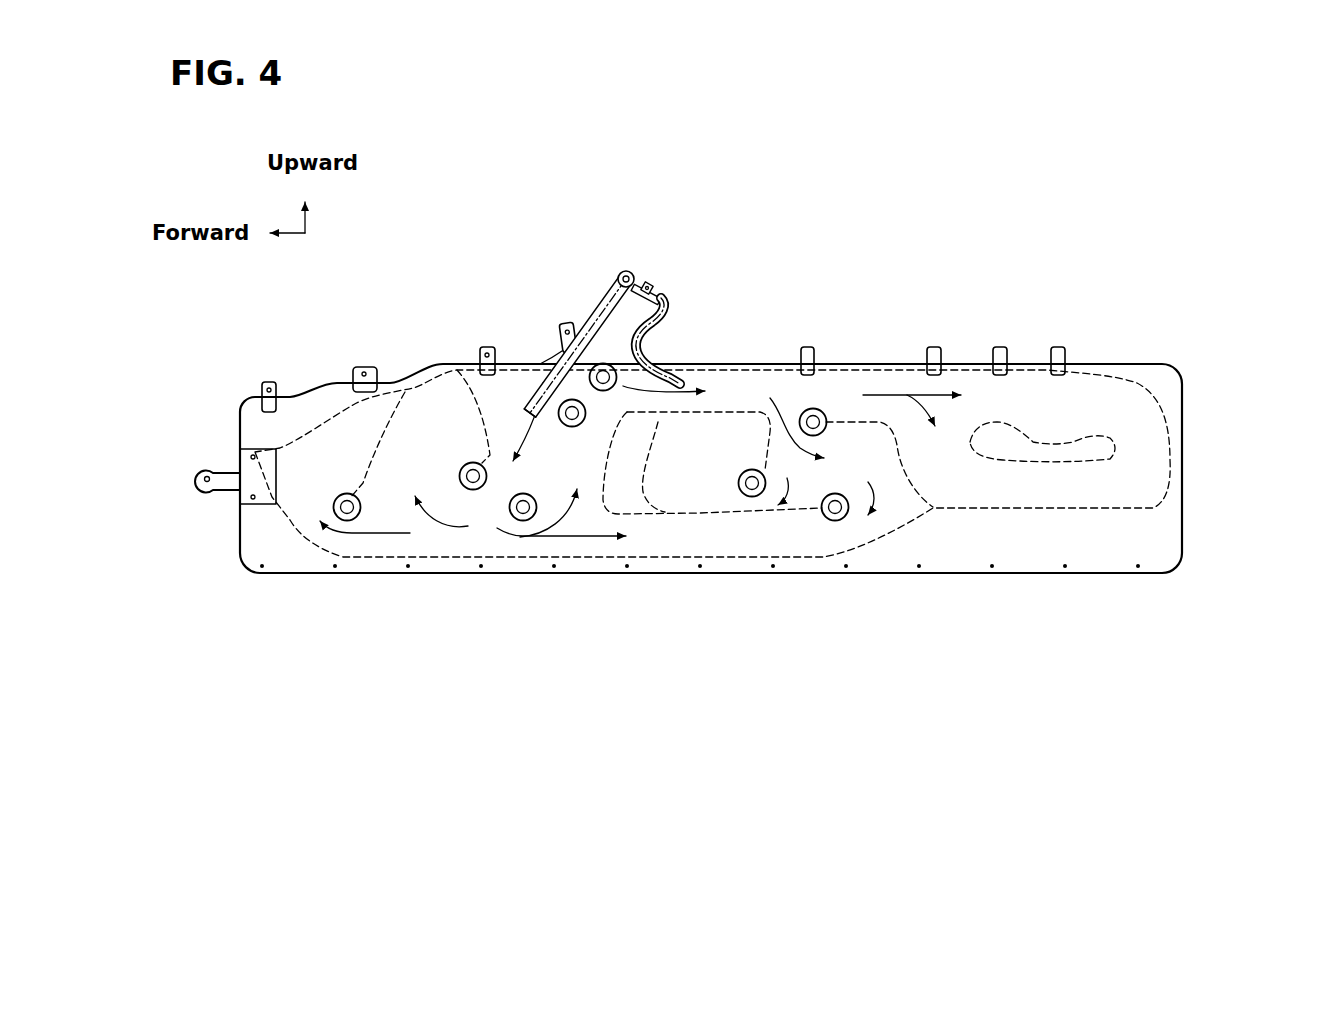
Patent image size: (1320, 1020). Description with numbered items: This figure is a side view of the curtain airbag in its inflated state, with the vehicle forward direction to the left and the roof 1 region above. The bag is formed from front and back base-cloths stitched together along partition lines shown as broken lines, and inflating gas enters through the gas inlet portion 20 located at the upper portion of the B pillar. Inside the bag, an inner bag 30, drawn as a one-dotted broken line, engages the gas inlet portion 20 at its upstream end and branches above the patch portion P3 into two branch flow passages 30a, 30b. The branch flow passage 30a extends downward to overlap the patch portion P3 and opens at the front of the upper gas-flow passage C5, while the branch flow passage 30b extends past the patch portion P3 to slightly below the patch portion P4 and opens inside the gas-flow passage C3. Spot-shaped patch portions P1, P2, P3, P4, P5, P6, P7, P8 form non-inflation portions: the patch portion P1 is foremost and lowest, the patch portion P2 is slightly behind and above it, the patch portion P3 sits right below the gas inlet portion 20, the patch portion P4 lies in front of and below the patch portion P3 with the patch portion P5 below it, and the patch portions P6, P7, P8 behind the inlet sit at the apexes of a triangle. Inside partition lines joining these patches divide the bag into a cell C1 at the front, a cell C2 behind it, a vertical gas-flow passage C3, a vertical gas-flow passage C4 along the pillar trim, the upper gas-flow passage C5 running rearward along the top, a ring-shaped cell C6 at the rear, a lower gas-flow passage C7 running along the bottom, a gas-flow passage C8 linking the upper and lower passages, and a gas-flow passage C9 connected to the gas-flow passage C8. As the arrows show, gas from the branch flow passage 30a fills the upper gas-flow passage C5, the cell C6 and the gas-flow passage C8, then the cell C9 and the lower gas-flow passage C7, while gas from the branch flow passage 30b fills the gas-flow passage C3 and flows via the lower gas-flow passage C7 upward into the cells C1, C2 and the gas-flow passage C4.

The roof 1 is at (1082, 190).
The gas inlet portion 20 is at (626, 271).
The inner bag 30 is at (600, 315).
The branch flow passage 30a is at (668, 382).
The branch flow passage 30b is at (560, 393).
The cell C1 is at (325, 437).
The cell C2 is at (429, 422).
The gas-flow passage C3 is at (499, 418).
The gas-flow passage C4 is at (590, 472).
The upper gas-flow passage C5 is at (762, 382).
The cell C6 is at (1120, 483).
The lower gas-flow passage C7 is at (407, 543).
The gas-flow passage C8 is at (852, 452).
The gas-flow passage C9 is at (725, 428).
The patch portion P1 is at (347, 521).
The patch portion P2 is at (471, 490).
The patch portion P3 is at (617, 377).
The patch portion P4 is at (586, 415).
The patch portion P5 is at (523, 521).
The patch portion P6 is at (752, 497).
The patch portion P7 is at (823, 410).
The patch portion P8 is at (835, 521).